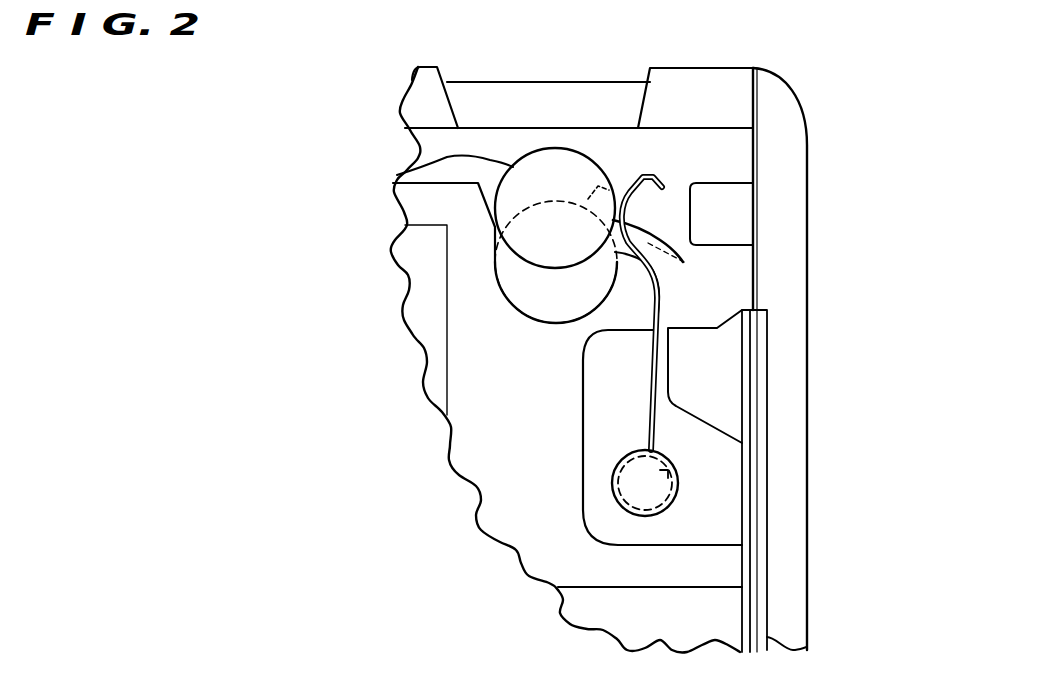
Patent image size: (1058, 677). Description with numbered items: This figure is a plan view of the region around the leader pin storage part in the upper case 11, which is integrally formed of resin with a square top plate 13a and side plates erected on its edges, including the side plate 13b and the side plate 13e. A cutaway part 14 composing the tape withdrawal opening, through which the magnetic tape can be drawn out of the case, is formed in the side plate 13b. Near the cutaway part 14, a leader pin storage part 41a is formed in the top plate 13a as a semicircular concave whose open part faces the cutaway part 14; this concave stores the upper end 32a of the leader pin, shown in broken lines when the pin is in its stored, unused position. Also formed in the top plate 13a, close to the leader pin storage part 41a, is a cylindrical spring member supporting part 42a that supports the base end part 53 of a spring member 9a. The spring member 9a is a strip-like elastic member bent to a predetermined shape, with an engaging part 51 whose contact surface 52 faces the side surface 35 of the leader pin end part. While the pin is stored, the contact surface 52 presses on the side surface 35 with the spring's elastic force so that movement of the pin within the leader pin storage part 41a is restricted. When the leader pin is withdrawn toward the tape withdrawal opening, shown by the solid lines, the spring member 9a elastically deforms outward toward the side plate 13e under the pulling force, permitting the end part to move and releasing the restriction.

The upper case 11 is at (296, 66).
The top plate 13a is at (510, 500).
The side plate 13b is at (417, 100).
The side plate 13e is at (795, 383).
The cutaway part 14 is at (566, 104).
The upper end 32a is at (397, 175).
The leader pin storage part 41a is at (494, 308).
The spring member supporting part 42a is at (612, 483).
The engaging part 51 is at (617, 192).
The contact surface 52 is at (610, 220).
The base end part 53 is at (618, 512).
The side surface 35 is at (663, 253).
The spring member 9a is at (663, 292).